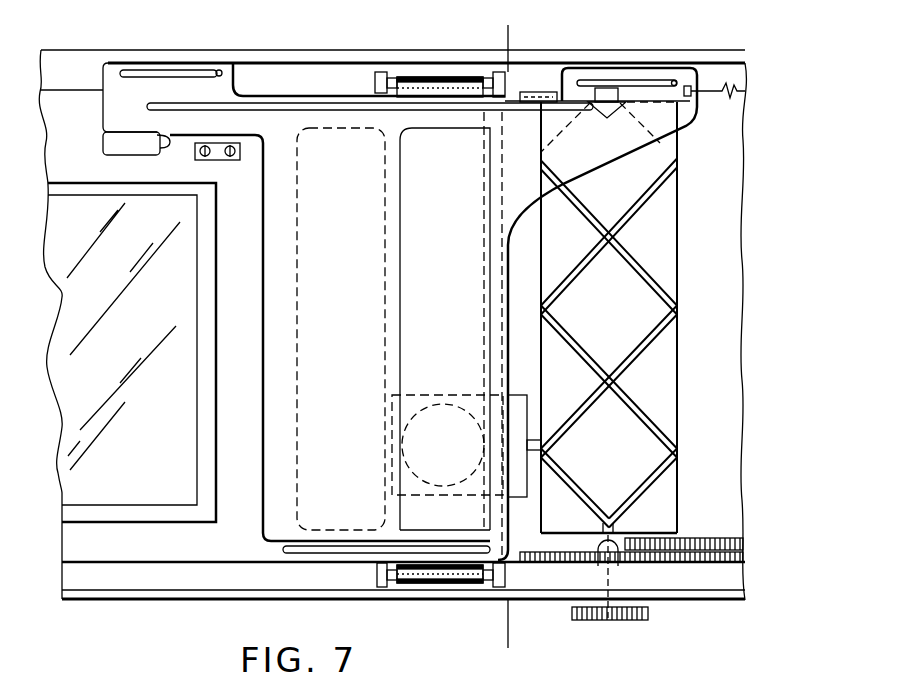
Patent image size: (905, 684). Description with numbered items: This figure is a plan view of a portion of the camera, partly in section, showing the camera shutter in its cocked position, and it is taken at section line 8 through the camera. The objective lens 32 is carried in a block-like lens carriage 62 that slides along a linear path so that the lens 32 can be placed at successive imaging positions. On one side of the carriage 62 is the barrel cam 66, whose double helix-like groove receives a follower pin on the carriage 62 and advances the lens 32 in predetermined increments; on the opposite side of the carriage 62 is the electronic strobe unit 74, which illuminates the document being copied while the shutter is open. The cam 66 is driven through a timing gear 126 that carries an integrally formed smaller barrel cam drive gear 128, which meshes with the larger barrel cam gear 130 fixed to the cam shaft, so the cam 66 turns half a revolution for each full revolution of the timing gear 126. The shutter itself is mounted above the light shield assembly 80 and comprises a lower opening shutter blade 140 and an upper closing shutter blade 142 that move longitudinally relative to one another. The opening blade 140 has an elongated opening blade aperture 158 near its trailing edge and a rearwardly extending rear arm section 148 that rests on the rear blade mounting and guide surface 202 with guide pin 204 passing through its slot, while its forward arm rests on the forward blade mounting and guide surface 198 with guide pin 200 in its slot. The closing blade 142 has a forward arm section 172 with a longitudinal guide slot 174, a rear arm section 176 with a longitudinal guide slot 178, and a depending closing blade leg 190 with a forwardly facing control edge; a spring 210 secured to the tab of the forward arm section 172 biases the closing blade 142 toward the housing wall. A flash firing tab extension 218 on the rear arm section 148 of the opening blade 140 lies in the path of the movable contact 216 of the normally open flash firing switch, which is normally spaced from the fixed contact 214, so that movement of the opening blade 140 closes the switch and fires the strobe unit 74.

The rear blade mounting and guide surface 202 is at (72, 73).
The rear arm section 176 is at (109, 67).
The longitudinal guide slot 178 is at (189, 76).
The guide pin 204 is at (220, 75).
The light shield assembly 80 is at (391, 62).
The section line 8- 8 is at (508, 32).
The closing blade leg 190 is at (535, 92).
The longitudinal guide slot 174 is at (622, 82).
The forward arm section 172 is at (683, 67).
The guide pin 200 is at (698, 73).
The forward blade mounting and guide surface 198 is at (747, 78).
The spring 210 is at (728, 92).
The rear arm section 148 is at (100, 143).
The flash firing tab extension 218 is at (167, 138).
The movable contact 216 is at (200, 150).
The fixed contact 214 is at (234, 152).
The opening blade aperture 158 is at (300, 252).
The opening shutter blade 140 is at (458, 275).
The objective lens 32 is at (451, 403).
The lens carriage 62 is at (513, 395).
The barrel cam 66 is at (680, 368).
The electronic strobe unit 74 is at (178, 525).
The closing shutter blade 142 is at (262, 568).
The barrel cam gear 130 is at (570, 560).
The timing gear 126 is at (692, 538).
The barrel cam drive gear 128 is at (720, 565).